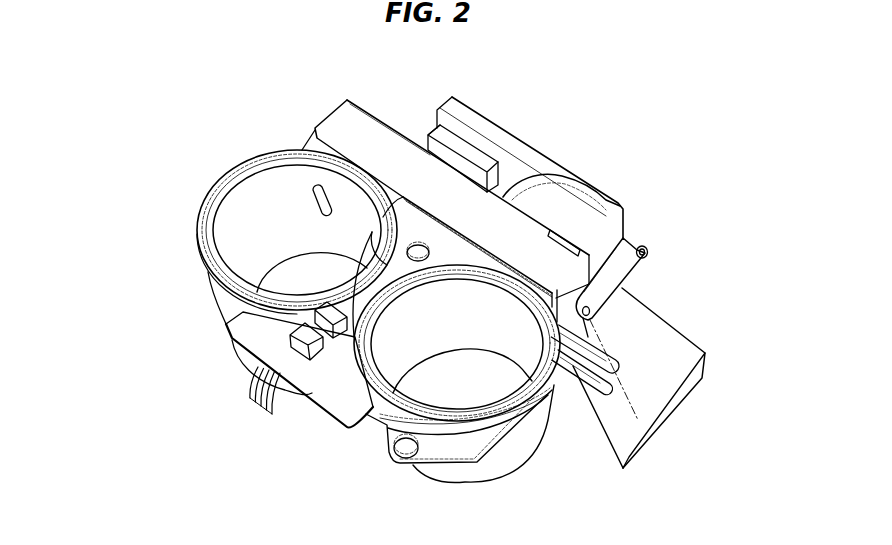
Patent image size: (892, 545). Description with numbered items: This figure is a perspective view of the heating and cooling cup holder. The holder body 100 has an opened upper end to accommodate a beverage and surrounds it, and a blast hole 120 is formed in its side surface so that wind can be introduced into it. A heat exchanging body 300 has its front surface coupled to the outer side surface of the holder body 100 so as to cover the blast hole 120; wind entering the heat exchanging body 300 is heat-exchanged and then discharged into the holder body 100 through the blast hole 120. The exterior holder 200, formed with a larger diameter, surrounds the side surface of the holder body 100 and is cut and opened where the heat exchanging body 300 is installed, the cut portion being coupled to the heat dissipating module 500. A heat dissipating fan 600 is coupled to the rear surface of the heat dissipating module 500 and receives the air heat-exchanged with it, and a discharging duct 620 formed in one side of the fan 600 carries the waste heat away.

The holder body 100 is at (262, 188).
The blast hole 120 is at (314, 186).
The exterior holder 200 is at (215, 198).
The heat exchanging body 300 is at (388, 213).
The heat dissipating module 500 is at (513, 230).
The heat dissipating fan 600 is at (573, 210).
The discharging duct 620 is at (648, 317).